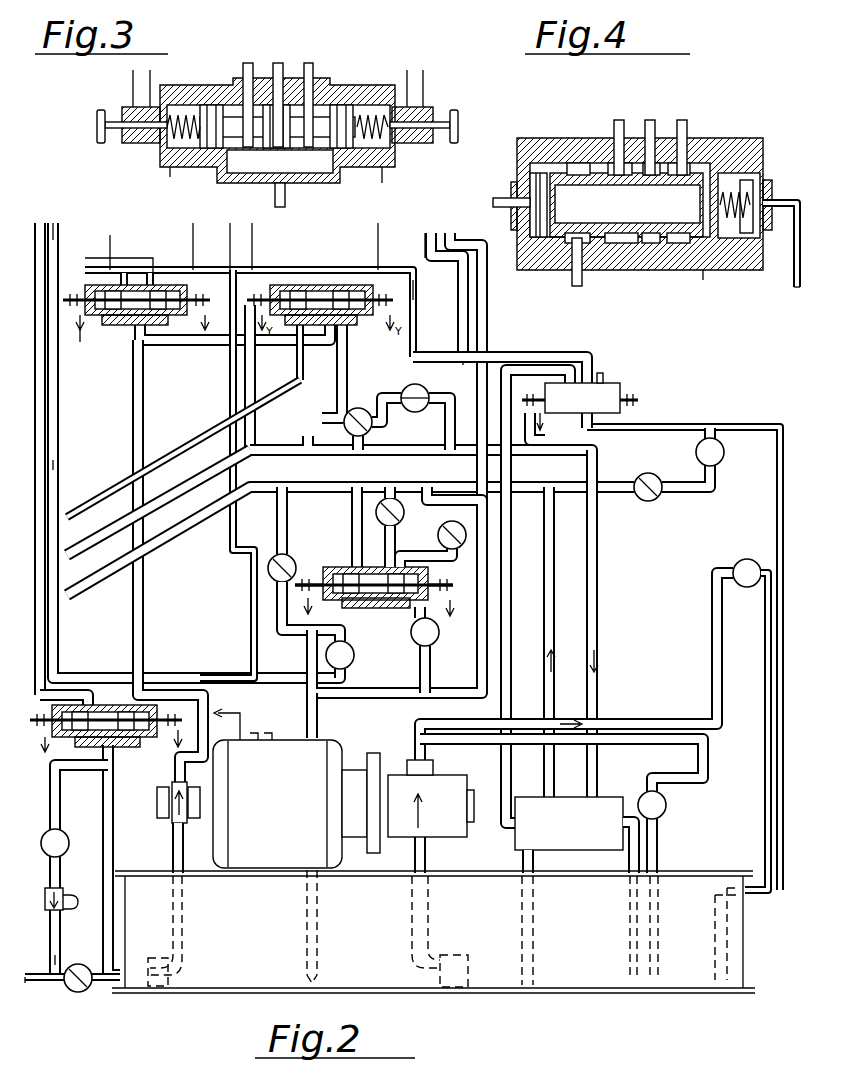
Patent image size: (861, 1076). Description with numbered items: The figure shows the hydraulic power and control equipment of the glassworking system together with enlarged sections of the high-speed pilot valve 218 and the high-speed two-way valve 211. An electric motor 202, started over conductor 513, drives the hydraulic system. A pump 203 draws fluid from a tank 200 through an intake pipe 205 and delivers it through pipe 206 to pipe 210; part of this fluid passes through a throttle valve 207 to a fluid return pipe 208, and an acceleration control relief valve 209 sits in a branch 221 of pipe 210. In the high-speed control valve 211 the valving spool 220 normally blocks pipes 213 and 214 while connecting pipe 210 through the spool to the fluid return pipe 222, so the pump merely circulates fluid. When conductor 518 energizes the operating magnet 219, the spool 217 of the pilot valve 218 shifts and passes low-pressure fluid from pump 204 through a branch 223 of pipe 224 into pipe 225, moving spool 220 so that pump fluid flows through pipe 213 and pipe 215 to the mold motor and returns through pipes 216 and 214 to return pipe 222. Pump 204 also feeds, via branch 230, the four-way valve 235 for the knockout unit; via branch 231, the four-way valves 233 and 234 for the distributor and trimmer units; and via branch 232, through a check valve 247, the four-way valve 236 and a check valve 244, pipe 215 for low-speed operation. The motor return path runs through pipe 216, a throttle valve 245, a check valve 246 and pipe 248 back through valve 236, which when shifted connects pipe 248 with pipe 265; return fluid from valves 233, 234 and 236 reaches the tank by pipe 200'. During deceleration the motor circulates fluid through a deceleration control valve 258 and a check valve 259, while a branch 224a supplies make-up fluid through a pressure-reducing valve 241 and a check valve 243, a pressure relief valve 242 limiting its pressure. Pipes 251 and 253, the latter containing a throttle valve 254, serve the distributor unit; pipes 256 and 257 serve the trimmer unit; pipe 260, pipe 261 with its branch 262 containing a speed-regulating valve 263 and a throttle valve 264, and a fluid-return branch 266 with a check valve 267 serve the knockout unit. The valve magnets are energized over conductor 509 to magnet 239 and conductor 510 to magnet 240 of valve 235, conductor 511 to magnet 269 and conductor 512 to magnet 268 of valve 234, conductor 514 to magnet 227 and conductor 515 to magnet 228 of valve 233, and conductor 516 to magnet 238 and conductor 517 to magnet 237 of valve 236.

In FIG. 2, the tank 200 is at (433, 949).
In FIG. 2, the pipe 200' is at (93, 470).
In FIG. 2, the motor 202 is at (262, 852).
In FIG. 2, the pump 203 is at (445, 786).
In FIG. 2, the pump 204 is at (175, 817).
In FIG. 2, the intake pipe 205 is at (428, 862).
In FIG. 2, the pipe 206 is at (635, 719).
In FIG. 2, the throttle valve 207 is at (736, 563).
In FIG. 2, the fluid return pipe 208 is at (770, 602).
In FIG. 2, the acceleration control relief valve 209 is at (666, 807).
In FIG. 4, the pipe 210 is at (650, 126).
In FIG. 2, the pipe 210 is at (574, 835).
In FIG. 4, the high-speed two-way valve 211 is at (703, 272).
In FIG. 2, the high-speed two-way valve 211 is at (575, 847).
In FIG. 4, the pipe 213 is at (612, 131).
In FIG. 2, the pipe 213 is at (555, 612).
In FIG. 4, the pipe 214 is at (688, 126).
In FIG. 2, the pipe 214 is at (598, 564).
In FIG. 2, the pipe 215 is at (525, 493).
In FIG. 2, the pipe 216 is at (600, 455).
In FIG. 3, the spool 217 is at (345, 115).
In FIG. 3, the four-way pilot valve 218 is at (334, 52).
In FIG. 2, the four-way pilot valve 218 is at (615, 394).
In FIG. 3, the operating magnet 219 is at (135, 140).
In FIG. 2, the operating magnet 219 is at (546, 440).
In FIG. 4, the valving spool 220 is at (725, 152).
In FIG. 2, the branch 221 is at (690, 785).
In FIG. 4, the fluid return pipe 222 is at (582, 278).
In FIG. 2, the fluid return pipe 222 is at (515, 907).
In FIG. 3, the branch 223 is at (273, 68).
In FIG. 2, the branch 223 is at (545, 362).
In FIG. 2, the pipe 224 is at (320, 699).
In FIG. 2, the branch 224a is at (282, 622).
In FIG. 3, the pipe 225 is at (243, 72).
In FIG. 4, the pipe 225 is at (498, 200).
In FIG. 2, the pipe 225 is at (512, 637).
In FIG. 2, the magnet 227 is at (248, 327).
In FIG. 2, the magnet 228 is at (412, 280).
In FIG. 2, the branch 230 is at (138, 695).
In FIG. 2, the branch 231 is at (388, 270).
In FIG. 2, the branch 232 is at (397, 590).
In FIG. 2, the four-way valve 233 is at (347, 335).
In FIG. 2, the four-way valve 234 is at (140, 342).
In FIG. 2, the four-way valve 235 is at (122, 760).
In FIG. 2, the four-way valve 236 is at (345, 567).
In FIG. 2, the magnet 237 is at (455, 590).
In FIG. 2, the magnet 238 is at (300, 596).
In FIG. 2, the magnet 239 is at (38, 705).
In FIG. 2, the magnet 240 is at (218, 345).
In FIG. 2, the pressure-reducing valve 241 is at (433, 652).
In FIG. 2, the pressure relief valve 242 is at (326, 658).
In FIG. 2, the check valve 243 is at (268, 570).
In FIG. 2, the check valve 244 is at (416, 547).
In FIG. 2, the throttle valve 245 is at (402, 392).
In FIG. 2, the check valve 246 is at (372, 426).
In FIG. 2, the check valve 247 is at (468, 547).
In FIG. 2, the pipe 248 is at (305, 486).
In FIG. 2, the pipe 251 is at (203, 428).
In FIG. 2, the pipe 253 is at (195, 458).
In FIG. 2, the throttle valve 254 is at (298, 405).
In FIG. 2, the pipe 256 is at (92, 258).
In FIG. 2, the pipe 257 is at (137, 255).
In FIG. 2, the deceleration control valve 258 is at (724, 453).
In FIG. 2, the check valve 259 is at (660, 498).
In FIG. 2, the pipe 260 is at (85, 695).
In FIG. 2, the pipe 261 is at (30, 985).
In FIG. 2, the branch 262 is at (58, 960).
In FIG. 2, the speed-regulating valve 263 is at (75, 885).
In FIG. 2, the throttle valve 264 is at (62, 830).
In FIG. 2, the pipe 265 is at (463, 584).
In FIG. 2, the fluid-return branch 266 is at (65, 984).
In FIG. 2, the check valve 267 is at (92, 992).
In FIG. 2, the magnet 268 is at (172, 342).
In FIG. 2, the magnet 269 is at (72, 334).
In FIG. 2, the conductor 509 is at (46, 452).
In FIG. 2, the conductor 510 is at (59, 423).
In FIG. 2, the conductor 511 is at (90, 222).
In FIG. 2, the conductor 512 is at (181, 246).
In FIG. 2, the conductor 513 is at (221, 246).
In FIG. 2, the conductor 514 is at (279, 248).
In FIG. 2, the conductor 515 is at (378, 262).
In FIG. 2, the conductor 516 is at (462, 318).
In FIG. 2, the conductor 517 is at (465, 330).
In FIG. 3, the conductor 518 is at (130, 92).
In FIG. 2, the conductor 518 is at (480, 327).